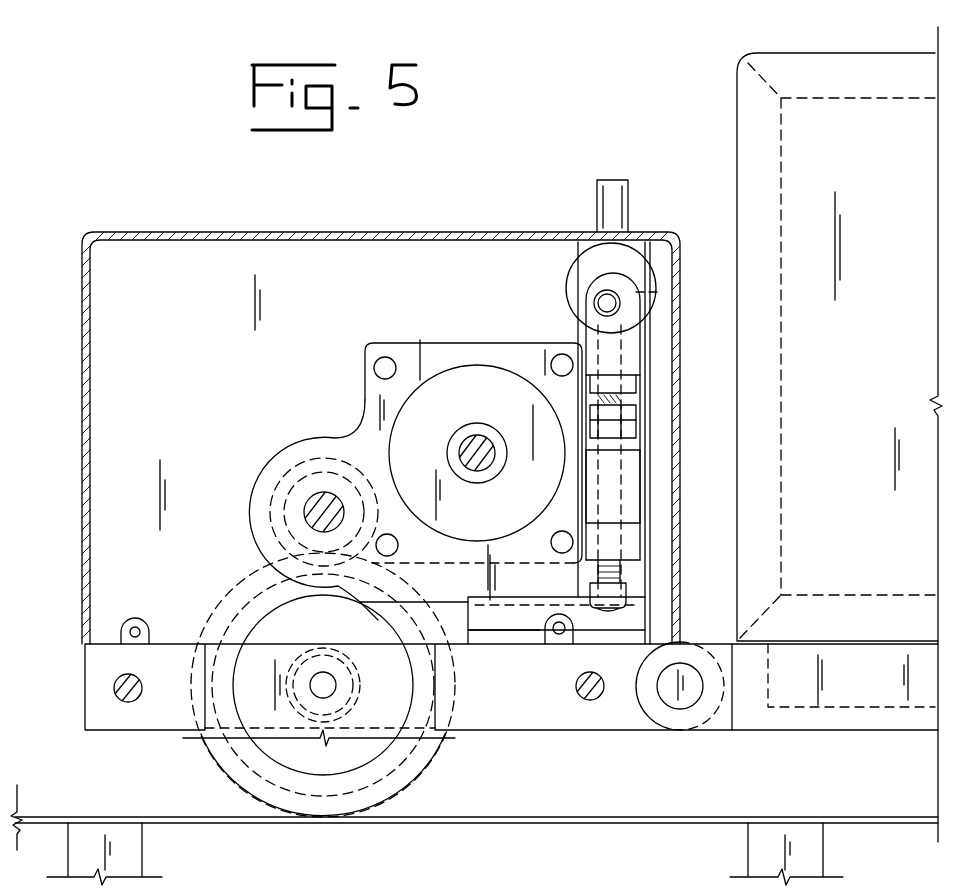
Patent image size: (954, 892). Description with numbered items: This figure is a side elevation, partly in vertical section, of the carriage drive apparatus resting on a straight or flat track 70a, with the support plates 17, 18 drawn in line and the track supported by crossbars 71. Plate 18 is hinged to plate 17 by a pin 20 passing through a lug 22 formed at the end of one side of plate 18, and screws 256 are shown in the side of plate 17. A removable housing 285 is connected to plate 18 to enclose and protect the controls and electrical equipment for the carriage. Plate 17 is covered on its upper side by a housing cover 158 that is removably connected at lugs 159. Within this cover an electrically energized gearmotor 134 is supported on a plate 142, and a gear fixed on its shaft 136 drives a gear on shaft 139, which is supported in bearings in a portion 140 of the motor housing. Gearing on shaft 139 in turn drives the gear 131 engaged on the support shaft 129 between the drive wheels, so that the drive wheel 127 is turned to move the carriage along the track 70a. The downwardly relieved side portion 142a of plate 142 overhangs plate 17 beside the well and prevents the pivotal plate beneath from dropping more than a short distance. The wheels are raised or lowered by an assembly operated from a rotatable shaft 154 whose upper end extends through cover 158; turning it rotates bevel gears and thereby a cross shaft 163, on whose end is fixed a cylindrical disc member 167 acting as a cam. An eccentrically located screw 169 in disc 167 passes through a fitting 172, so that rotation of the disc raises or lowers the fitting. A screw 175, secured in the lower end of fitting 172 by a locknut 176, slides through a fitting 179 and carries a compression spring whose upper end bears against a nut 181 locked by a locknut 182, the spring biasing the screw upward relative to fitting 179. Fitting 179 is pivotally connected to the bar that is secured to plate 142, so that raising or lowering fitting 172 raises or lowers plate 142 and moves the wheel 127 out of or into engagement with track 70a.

The support plate 17 is at (85, 681).
The support plate 18 is at (843, 730).
The pin 20 is at (668, 708).
The lug 22 is at (638, 712).
The straight or flat track 70a is at (540, 818).
The crossbar 71 is at (143, 849).
The drive wheel 127 is at (446, 751).
The support shaft 129 is at (337, 686).
The gear 131 is at (225, 760).
The gearmotor 134 is at (478, 344).
The motor shaft 136 is at (479, 437).
The shaft 139 is at (305, 510).
The housing portion of motor 140 is at (272, 461).
The plate 142 is at (648, 621).
The downwardly relieved side portion 142a is at (506, 633).
The rotatable shaft 154 is at (628, 214).
The housing cover 158 is at (345, 232).
The lug 159 is at (150, 613).
The cross shaft 163 is at (660, 292).
The cam member (cylindrical disc) 167 is at (648, 278).
The screw 169 is at (594, 303).
The fitting 172 is at (640, 362).
The screw 175 is at (626, 592).
The locknut 176 is at (633, 391).
The fitting 179 is at (638, 476).
The nut 181 is at (636, 430).
The locknut 182 is at (636, 412).
The screw 256 is at (118, 696).
The housing 285 is at (820, 53).